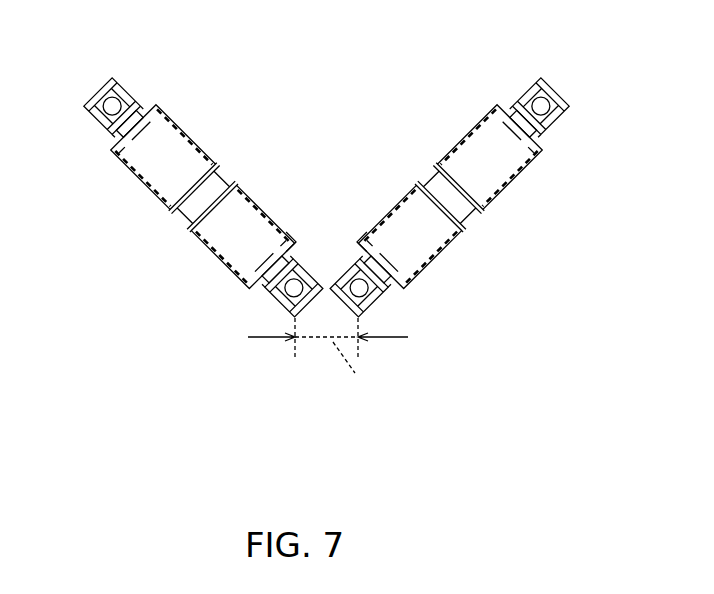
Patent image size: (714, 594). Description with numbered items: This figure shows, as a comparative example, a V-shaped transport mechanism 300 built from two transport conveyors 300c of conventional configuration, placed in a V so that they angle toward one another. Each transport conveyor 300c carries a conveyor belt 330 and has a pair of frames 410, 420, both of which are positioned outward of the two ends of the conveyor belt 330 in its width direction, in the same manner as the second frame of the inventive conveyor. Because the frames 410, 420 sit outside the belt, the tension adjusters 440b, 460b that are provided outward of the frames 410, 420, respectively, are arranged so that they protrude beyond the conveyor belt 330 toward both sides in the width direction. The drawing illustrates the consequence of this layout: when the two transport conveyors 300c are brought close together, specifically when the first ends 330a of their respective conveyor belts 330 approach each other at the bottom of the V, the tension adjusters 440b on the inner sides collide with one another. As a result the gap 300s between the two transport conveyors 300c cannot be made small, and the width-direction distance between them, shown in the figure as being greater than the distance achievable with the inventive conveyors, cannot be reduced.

The V-shaped transport mechanism 300 is at (257, 68).
The transport conveyor 300c is at (240, 146).
The gap 300s is at (316, 350).
The conveyor belt 330 is at (244, 171).
The first end 330a is at (297, 229).
The frame 410 is at (233, 288).
The frame 420 is at (97, 148).
The tension adjuster 440b is at (271, 314).
The tension adjuster 460b is at (141, 74).